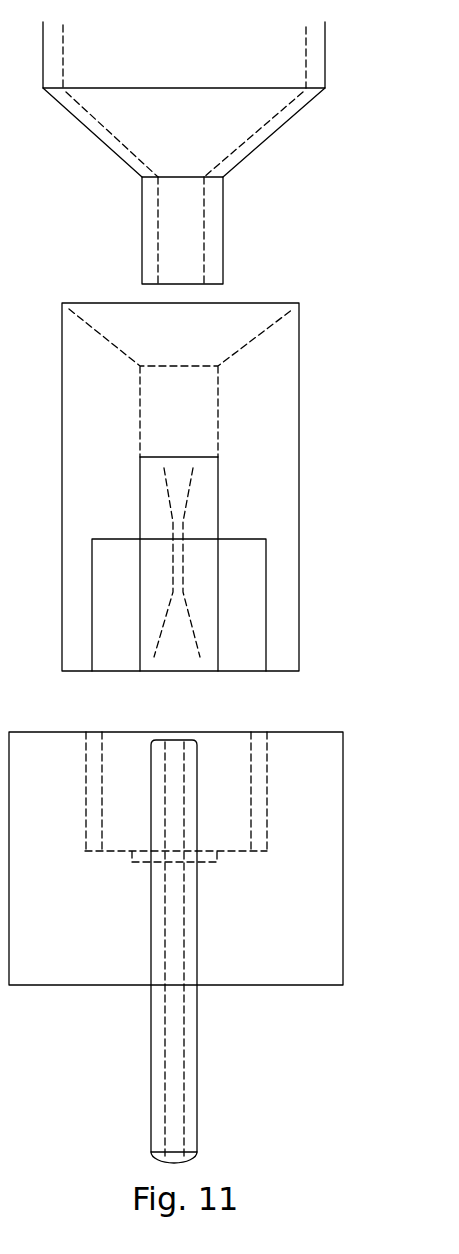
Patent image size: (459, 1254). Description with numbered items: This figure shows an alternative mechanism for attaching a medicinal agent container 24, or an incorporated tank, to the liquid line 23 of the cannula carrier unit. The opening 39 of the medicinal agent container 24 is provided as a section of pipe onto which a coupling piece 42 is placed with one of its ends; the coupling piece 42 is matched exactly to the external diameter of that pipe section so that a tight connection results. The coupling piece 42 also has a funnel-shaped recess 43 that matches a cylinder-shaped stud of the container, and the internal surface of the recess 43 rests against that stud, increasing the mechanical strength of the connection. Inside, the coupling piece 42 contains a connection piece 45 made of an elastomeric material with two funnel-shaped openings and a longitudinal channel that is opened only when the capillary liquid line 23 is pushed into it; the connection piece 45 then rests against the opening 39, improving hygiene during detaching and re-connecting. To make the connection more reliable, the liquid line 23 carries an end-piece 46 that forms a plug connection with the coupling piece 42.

The medicinal agent container 24 is at (325, 52).
The opening 39 is at (190, 211).
The coupling piece 42 is at (299, 416).
The funnel-shaped recess 43 is at (243, 319).
The connection piece 45 is at (185, 528).
The end-piece 46 is at (325, 765).
The liquid line 23 is at (183, 1048).